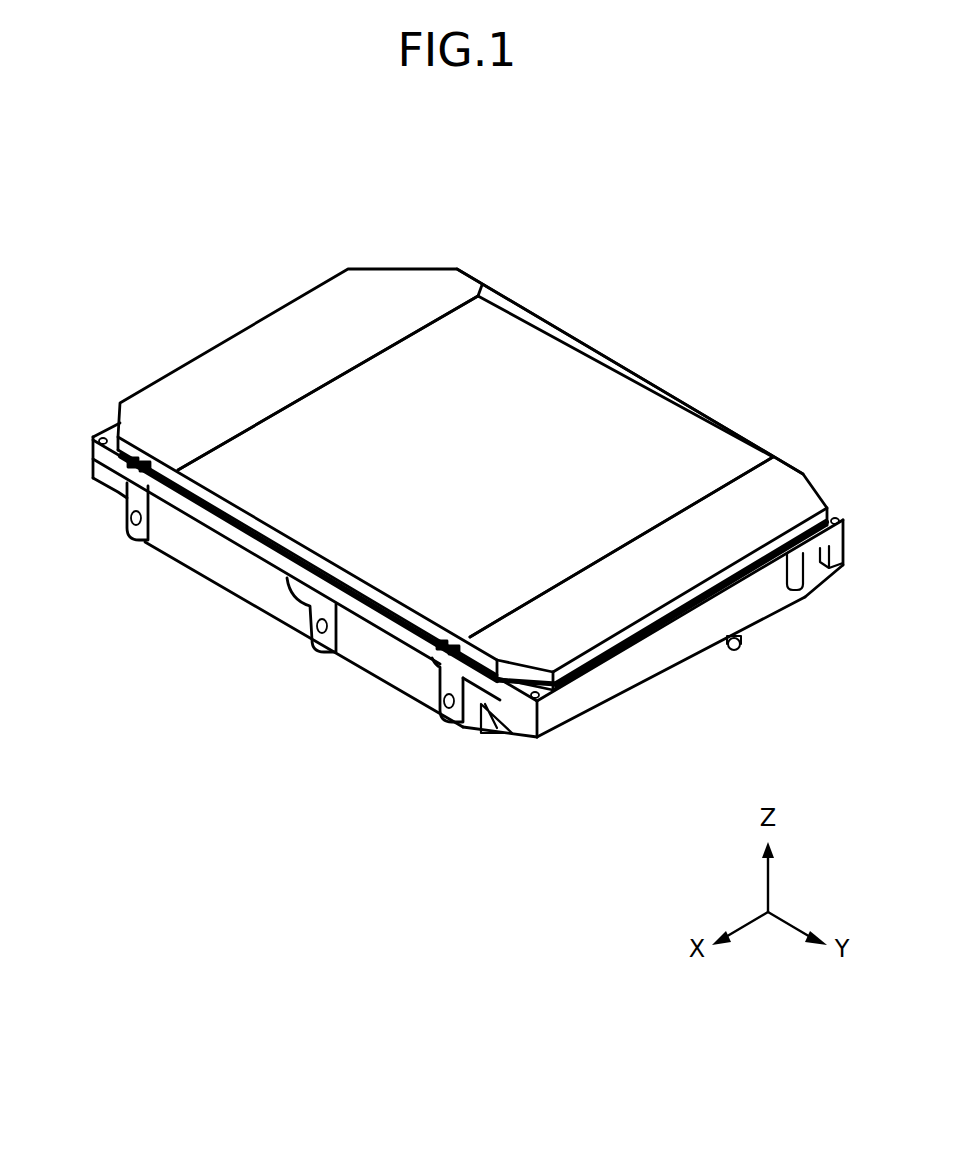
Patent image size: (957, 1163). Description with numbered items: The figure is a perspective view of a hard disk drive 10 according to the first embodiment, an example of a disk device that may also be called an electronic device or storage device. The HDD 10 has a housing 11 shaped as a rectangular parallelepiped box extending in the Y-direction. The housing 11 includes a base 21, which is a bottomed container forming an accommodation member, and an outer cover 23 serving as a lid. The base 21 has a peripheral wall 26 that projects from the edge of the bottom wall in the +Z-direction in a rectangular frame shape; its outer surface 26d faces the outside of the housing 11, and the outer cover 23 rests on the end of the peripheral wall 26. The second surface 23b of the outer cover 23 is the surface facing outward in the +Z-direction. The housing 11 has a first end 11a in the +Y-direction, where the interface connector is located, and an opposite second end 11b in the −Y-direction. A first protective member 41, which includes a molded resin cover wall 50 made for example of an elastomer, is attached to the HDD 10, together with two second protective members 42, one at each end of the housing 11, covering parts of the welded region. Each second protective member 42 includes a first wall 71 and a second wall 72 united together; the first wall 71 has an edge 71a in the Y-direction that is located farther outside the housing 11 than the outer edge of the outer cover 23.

The hard disk drive 10 is at (208, 180).
The first wall 71 is at (364, 298).
The edge 71a is at (204, 346).
The second protective member 42 is at (280, 333).
The first protective member 41 is at (630, 343).
The cover wall 50 is at (556, 331).
The outer cover 23 is at (475, 460).
The second surface 23b is at (609, 408).
The housing 11 is at (360, 688).
The first end 11a is at (643, 673).
The second end 11b is at (93, 456).
The base 21 is at (273, 593).
The peripheral wall 26 is at (273, 593).
The outer surface 26d is at (204, 560).
The second wall 72 is at (758, 558).